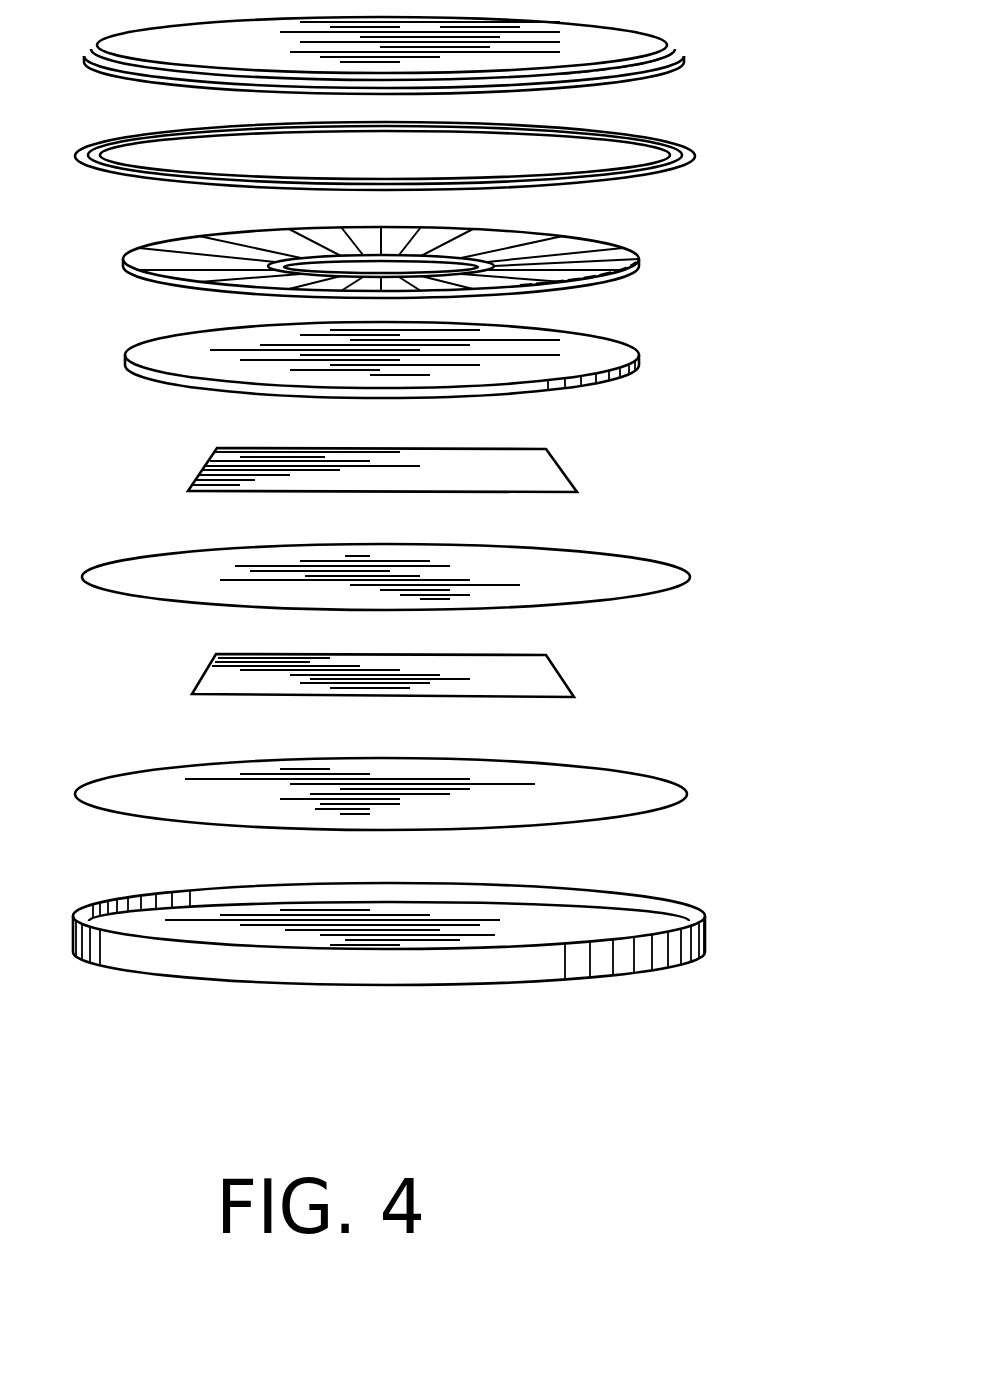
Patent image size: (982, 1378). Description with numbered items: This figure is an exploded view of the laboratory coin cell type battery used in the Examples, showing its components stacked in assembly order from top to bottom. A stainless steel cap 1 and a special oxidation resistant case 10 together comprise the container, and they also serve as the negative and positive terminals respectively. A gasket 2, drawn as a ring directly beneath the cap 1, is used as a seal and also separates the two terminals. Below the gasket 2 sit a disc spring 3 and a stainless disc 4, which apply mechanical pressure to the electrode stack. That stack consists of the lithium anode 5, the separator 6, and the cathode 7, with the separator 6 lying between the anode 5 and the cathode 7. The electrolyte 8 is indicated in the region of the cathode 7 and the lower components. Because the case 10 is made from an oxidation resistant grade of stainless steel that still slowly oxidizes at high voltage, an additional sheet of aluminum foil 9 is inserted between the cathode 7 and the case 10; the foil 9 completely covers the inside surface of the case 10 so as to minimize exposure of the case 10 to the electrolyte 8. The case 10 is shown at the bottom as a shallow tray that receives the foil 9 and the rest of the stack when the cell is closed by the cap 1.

The stainless steel cap 1 is at (720, 62).
The gasket 2 is at (730, 158).
The disc spring 3 is at (700, 248).
The stainless disc 4 is at (694, 365).
The lithium anode 5 is at (671, 467).
The separator 6 is at (728, 577).
The cathode 7 is at (659, 675).
The electrolyte 8 is at (652, 732).
The aluminum foil 9 is at (723, 800).
The oxidation resistant case 10 is at (733, 936).